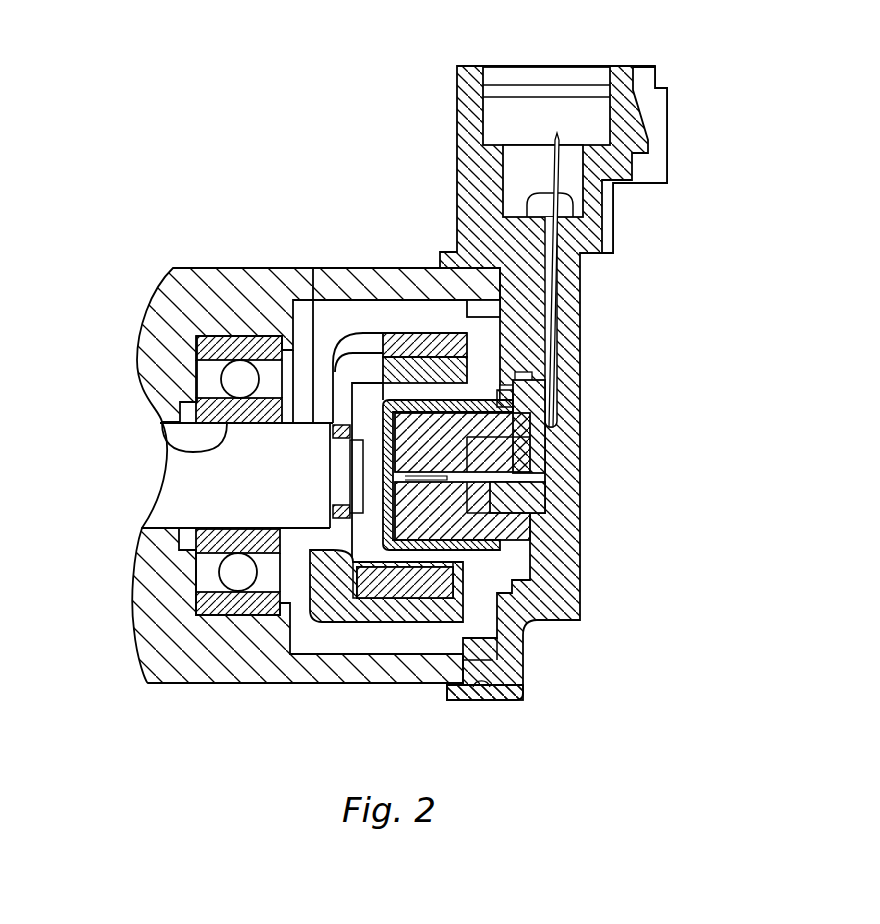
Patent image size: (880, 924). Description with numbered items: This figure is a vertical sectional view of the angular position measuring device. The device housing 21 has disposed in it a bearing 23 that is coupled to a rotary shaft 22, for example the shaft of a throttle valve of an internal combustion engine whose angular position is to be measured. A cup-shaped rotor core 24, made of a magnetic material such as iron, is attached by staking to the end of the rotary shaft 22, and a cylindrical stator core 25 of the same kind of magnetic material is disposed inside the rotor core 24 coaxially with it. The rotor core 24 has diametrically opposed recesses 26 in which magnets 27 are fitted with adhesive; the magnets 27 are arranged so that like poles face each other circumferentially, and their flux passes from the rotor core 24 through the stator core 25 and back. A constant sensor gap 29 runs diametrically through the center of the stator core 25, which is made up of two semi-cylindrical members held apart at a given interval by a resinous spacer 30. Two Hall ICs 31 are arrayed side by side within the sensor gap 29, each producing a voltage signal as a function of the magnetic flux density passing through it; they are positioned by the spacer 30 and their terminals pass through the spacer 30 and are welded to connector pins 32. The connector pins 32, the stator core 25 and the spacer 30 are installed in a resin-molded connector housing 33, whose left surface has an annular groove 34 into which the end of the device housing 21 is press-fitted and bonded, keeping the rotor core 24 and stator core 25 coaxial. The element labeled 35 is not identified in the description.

The device housing 21 is at (172, 278).
The rotary shaft 22 is at (212, 478).
The bearing 23 is at (168, 447).
The rotor core 24 is at (360, 615).
The stator core 25 is at (545, 432).
The recesses 26 is at (350, 365).
The magnets 27 is at (430, 350).
The sensor gap 29 is at (380, 463).
The spacer 30 is at (515, 495).
The Hall ICs 31 is at (437, 482).
The connector pins 32 is at (553, 170).
The connector housing 33 is at (580, 351).
The annular groove 34 is at (480, 700).
The mounting boss 35 is at (468, 700).